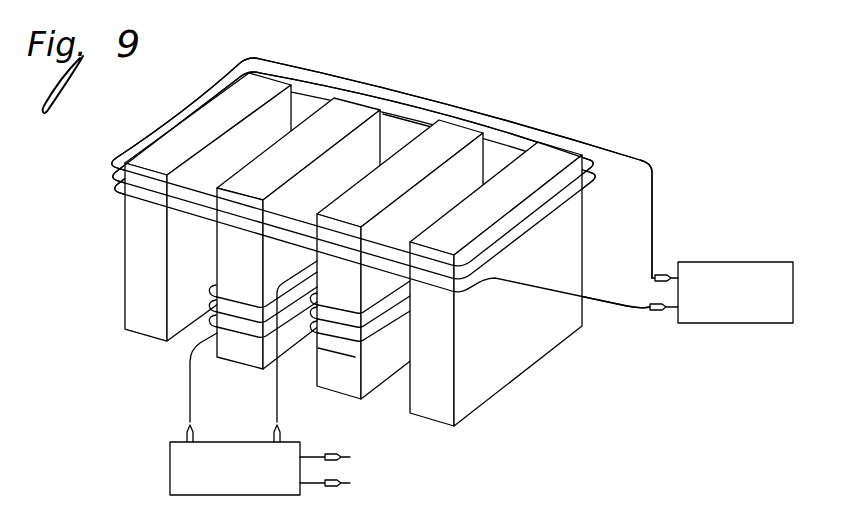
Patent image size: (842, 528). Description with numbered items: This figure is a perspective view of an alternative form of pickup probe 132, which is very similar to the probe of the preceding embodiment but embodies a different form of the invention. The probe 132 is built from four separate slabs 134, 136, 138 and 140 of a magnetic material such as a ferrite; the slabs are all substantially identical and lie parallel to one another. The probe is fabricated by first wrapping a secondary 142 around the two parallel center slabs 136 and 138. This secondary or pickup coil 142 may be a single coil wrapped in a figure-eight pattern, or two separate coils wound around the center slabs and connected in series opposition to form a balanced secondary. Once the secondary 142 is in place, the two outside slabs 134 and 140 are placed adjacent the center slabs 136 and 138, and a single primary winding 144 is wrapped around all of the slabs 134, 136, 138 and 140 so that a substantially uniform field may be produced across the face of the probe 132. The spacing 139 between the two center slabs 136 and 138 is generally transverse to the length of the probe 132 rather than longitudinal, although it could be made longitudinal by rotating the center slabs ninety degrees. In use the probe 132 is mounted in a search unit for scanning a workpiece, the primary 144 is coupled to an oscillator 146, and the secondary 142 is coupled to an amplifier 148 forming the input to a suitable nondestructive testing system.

The pickup probe 132 is at (567, 113).
The outside slab 134 is at (253, 88).
The center slab 136 is at (400, 128).
The center slab 138 is at (440, 140).
The spacing 139 is at (443, 137).
The outside slab 140 is at (567, 150).
The secondary 142 is at (205, 318).
The primary winding 144 is at (107, 167).
The oscillator 146 is at (724, 262).
The amplifier 148 is at (170, 458).